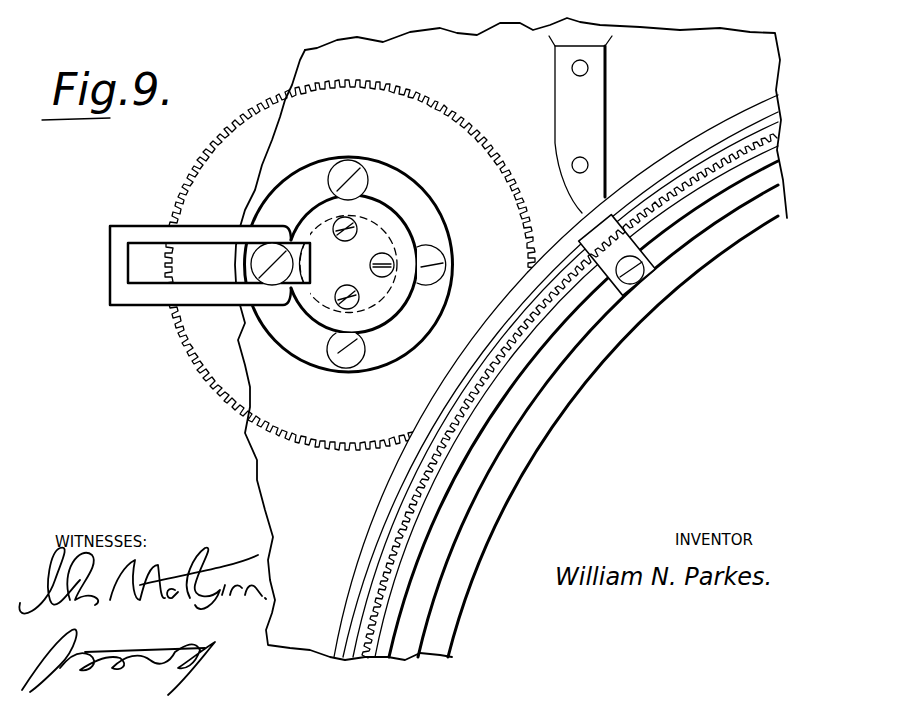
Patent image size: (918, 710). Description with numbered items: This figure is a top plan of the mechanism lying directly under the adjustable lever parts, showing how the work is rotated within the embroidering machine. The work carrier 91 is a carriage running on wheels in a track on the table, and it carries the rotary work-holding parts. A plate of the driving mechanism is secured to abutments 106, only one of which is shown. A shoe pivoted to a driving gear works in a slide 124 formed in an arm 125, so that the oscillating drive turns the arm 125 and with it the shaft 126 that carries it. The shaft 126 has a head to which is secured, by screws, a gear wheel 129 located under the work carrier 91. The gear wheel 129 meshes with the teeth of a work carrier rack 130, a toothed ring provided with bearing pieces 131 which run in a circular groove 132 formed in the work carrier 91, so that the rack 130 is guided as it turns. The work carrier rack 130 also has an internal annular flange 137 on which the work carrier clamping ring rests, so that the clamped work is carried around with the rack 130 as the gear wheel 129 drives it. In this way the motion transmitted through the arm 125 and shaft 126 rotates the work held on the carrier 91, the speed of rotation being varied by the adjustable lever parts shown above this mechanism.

The work carrier 91 is at (350, 249).
The abutment 106 is at (596, 113).
The slide 124 is at (148, 283).
The arm 125 is at (173, 291).
The shaft 126 is at (245, 264).
The gear wheel 129 is at (491, 339).
The work carrier rack 130 is at (498, 432).
The bearing piece 131 is at (587, 235).
The circular groove 132 is at (725, 148).
The internal annular flange 137 is at (625, 327).